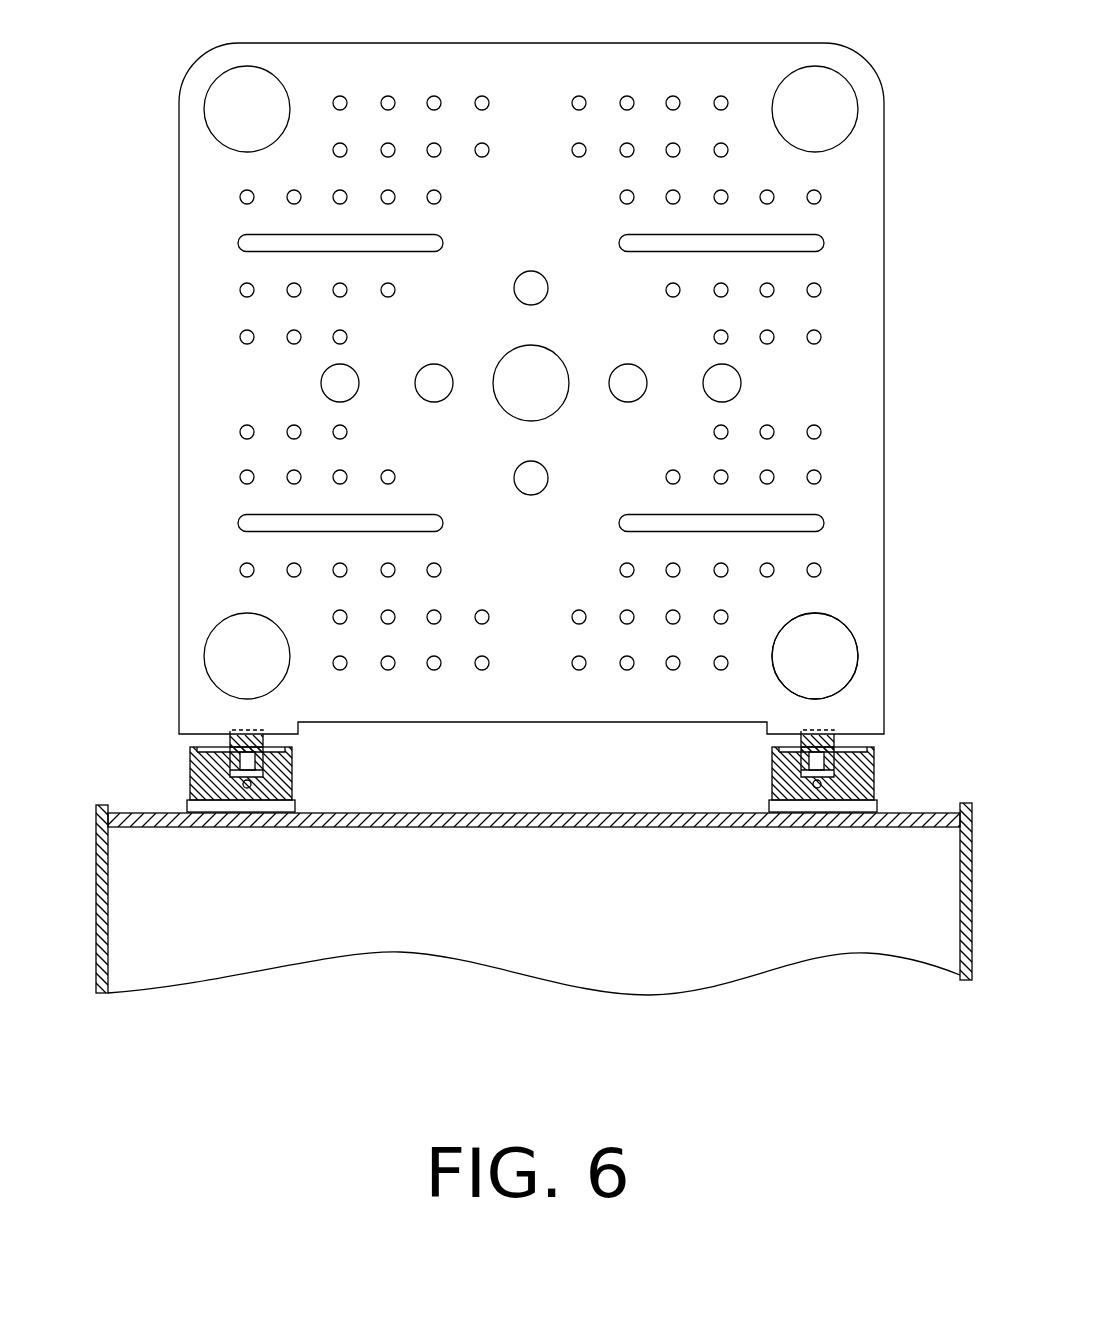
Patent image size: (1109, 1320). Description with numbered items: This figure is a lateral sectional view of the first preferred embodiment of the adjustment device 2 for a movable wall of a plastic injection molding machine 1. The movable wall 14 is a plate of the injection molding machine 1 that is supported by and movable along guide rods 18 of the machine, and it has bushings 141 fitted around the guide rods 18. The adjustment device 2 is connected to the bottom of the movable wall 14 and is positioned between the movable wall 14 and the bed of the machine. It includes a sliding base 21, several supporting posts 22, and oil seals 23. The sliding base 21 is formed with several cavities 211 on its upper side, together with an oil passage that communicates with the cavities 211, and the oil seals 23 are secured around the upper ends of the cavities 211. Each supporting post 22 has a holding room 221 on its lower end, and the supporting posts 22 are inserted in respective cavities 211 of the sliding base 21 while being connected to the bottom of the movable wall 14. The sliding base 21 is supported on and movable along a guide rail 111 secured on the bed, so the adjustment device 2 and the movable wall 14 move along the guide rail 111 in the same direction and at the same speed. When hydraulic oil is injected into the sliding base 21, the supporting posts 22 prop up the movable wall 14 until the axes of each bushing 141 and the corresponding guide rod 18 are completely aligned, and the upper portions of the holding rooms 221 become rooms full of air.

The plastic injection molding machine 1 is at (554, 888).
The guide rail 111 is at (192, 807).
The movable wall 14 is at (551, 388).
The bushing 141 is at (832, 614).
The guide rod 18 is at (832, 647).
The adjustment device 2 is at (536, 710).
The sliding base 21 is at (863, 778).
The cavity 211 is at (258, 758).
The supporting post 22 is at (517, 710).
The holding room 221 is at (250, 776).
The oil seal 23 is at (837, 760).